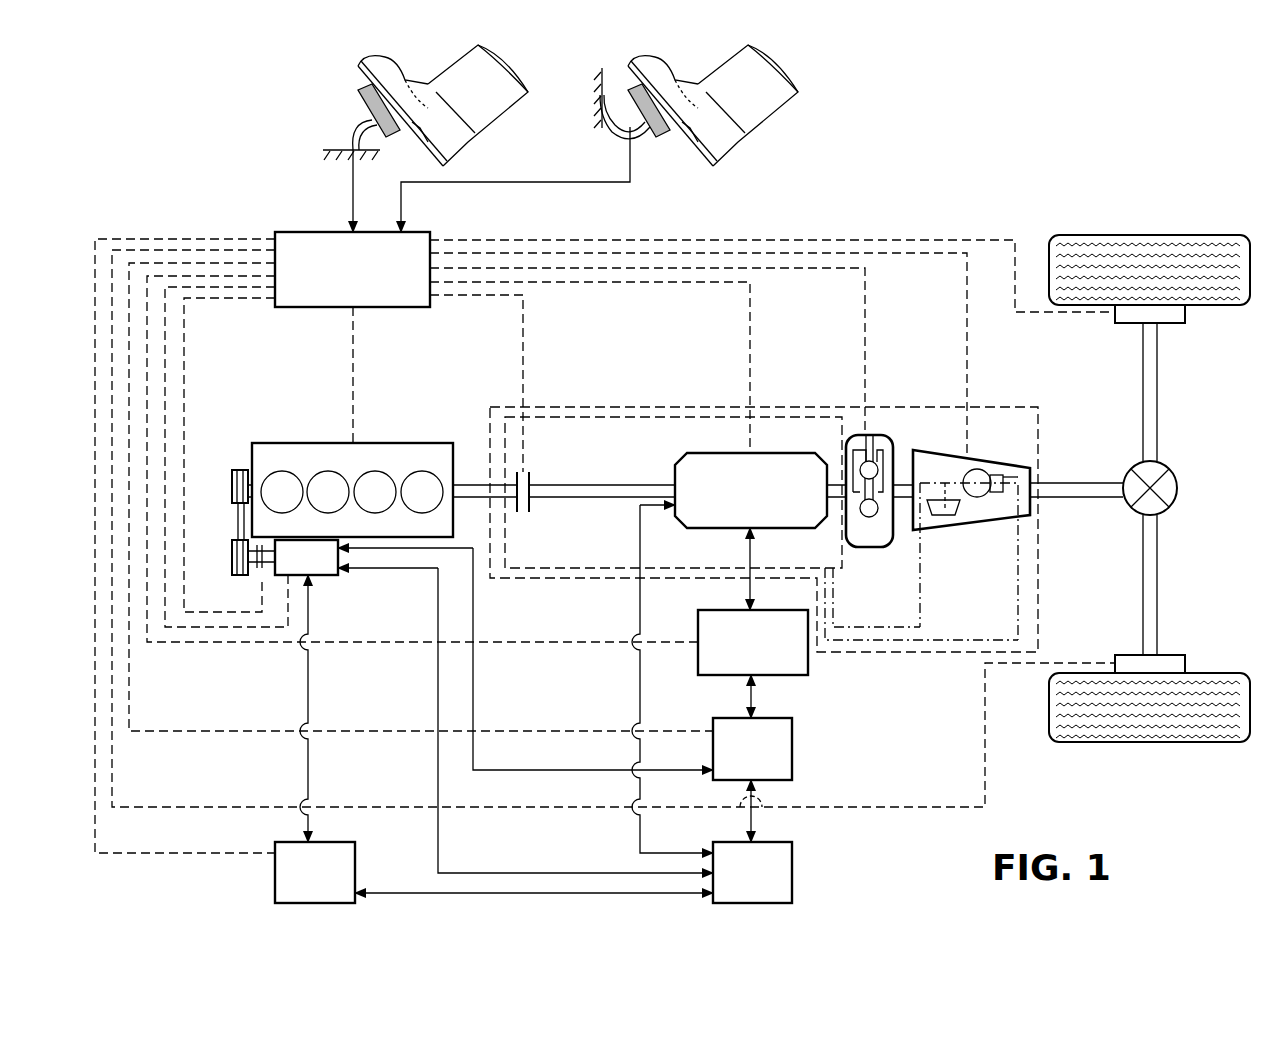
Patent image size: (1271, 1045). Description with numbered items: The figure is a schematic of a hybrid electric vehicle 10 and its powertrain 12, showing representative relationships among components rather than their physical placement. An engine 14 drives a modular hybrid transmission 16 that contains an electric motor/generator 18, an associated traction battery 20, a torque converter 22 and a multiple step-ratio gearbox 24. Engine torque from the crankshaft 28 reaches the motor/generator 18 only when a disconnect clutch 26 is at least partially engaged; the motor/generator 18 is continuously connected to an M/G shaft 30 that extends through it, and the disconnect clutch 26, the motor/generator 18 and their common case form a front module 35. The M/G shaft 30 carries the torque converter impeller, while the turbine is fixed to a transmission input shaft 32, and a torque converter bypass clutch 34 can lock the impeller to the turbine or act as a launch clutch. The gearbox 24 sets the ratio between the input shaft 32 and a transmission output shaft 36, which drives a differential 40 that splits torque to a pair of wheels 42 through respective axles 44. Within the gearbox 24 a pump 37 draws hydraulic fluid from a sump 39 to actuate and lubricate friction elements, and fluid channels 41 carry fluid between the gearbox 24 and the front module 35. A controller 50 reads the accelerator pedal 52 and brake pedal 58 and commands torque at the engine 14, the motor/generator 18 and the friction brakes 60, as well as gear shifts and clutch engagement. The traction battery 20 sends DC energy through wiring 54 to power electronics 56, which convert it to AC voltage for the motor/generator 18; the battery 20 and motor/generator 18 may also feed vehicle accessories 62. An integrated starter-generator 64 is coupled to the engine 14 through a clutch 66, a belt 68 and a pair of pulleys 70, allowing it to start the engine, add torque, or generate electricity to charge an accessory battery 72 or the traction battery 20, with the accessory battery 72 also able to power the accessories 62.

The hybrid electric vehicle 10 is at (867, 150).
The powertrain 12 is at (410, 683).
The engine 14 is at (305, 443).
The transmission 16 is at (815, 407).
The electric motor/generator 18 is at (722, 453).
The traction battery 20 is at (792, 750).
The torque converter 22 is at (866, 547).
The gearbox 24 is at (985, 530).
The disconnect clutch 26 is at (535, 475).
The crankshaft 28 is at (250, 487).
The M/G shaft 30 is at (625, 483).
The transmission input shaft 32 is at (903, 483).
The torque converter bypass clutch 34 is at (870, 435).
The front module 35 is at (620, 407).
The transmission output shaft 36 is at (1065, 483).
The pump 37 is at (990, 475).
The sump 39 is at (960, 515).
The differential 40 is at (1178, 492).
The fluid channels 41 is at (880, 640).
The wheels 42 is at (1150, 235).
The axles 44 is at (1158, 385).
The controller 50 is at (310, 232).
The accelerator pedal 52 is at (356, 103).
The wiring 54 is at (750, 697).
The power electronics 56 is at (808, 660).
The brake pedal 58 is at (672, 140).
The friction brakes 60 is at (1185, 312).
The vehicle accessories 62 is at (792, 875).
The integrated starter-generator 64 is at (325, 575).
The clutch 66 is at (259, 568).
The belt 68 is at (232, 530).
The pulleys 70 is at (232, 490).
The accessory battery 72 is at (355, 870).